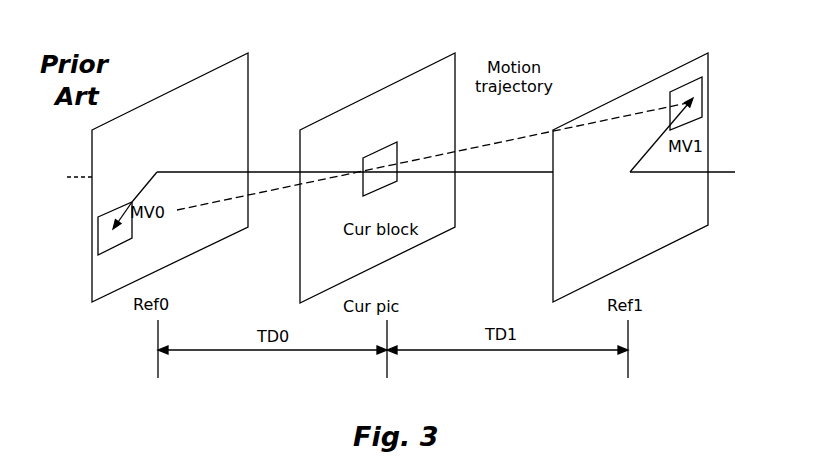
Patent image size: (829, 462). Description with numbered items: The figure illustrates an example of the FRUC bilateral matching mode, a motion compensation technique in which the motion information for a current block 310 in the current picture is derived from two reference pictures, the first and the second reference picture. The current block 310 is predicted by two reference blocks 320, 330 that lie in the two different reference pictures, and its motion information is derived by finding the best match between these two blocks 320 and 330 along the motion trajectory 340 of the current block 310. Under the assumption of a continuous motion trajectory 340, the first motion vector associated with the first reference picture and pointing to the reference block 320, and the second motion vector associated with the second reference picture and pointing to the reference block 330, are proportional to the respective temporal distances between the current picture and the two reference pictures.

The current block 310 is at (379, 151).
The reference block 320 is at (112, 211).
The reference block 330 is at (683, 86).
The motion trajectory 340 is at (521, 136).